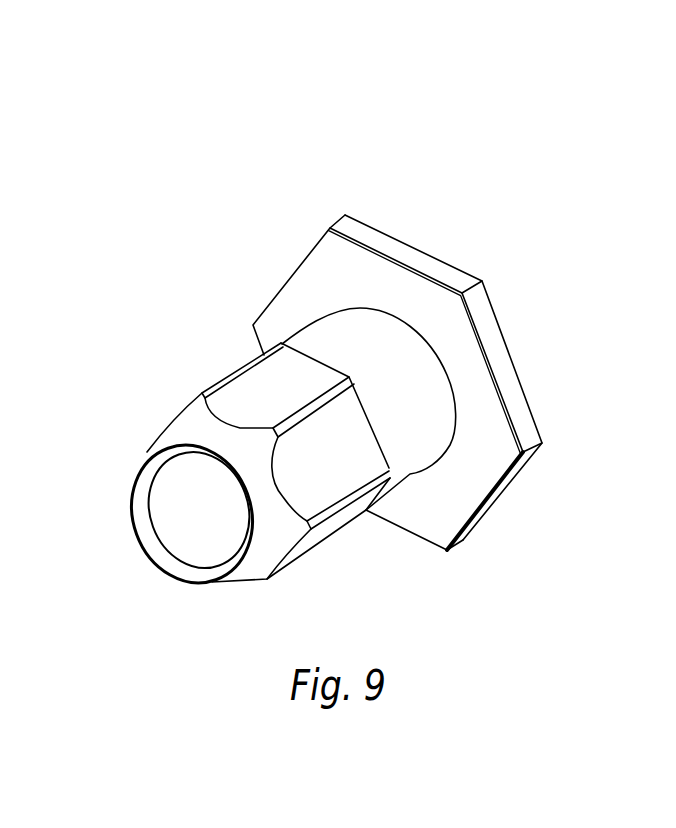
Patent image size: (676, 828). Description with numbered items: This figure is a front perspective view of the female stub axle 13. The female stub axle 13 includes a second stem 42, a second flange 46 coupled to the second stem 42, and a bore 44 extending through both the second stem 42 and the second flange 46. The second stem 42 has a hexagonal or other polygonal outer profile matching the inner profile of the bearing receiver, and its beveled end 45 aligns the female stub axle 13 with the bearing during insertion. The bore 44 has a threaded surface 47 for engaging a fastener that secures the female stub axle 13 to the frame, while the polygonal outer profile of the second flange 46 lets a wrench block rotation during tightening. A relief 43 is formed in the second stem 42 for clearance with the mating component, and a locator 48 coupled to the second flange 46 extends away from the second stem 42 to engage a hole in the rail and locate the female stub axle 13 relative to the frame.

The female stub axle 13 is at (170, 119).
The second stem 42 is at (217, 379).
The relief 43 is at (409, 470).
The bore 44 is at (202, 532).
The beveled end 45 is at (182, 423).
The second flange 46 is at (361, 218).
The threaded surface 47 is at (222, 553).
The locator 48 is at (441, 316).